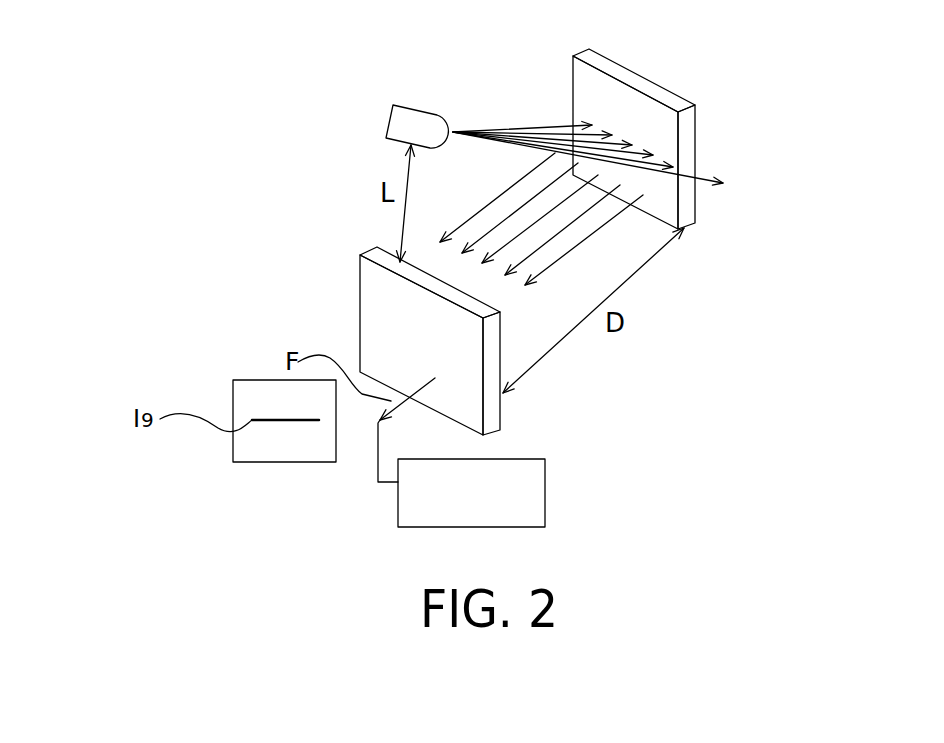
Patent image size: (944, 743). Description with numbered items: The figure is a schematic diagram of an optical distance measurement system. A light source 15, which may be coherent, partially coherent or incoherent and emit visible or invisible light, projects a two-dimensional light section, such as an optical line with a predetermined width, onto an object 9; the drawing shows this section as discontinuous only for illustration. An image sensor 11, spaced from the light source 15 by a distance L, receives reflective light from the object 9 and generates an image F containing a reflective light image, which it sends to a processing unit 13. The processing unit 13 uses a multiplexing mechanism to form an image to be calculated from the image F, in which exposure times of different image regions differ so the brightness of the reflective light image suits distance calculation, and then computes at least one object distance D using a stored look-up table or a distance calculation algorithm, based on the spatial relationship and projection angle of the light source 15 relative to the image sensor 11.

The object 9 is at (672, 100).
The image sensor 11 is at (378, 255).
The processing unit 13 is at (547, 490).
The light source 15 is at (417, 110).